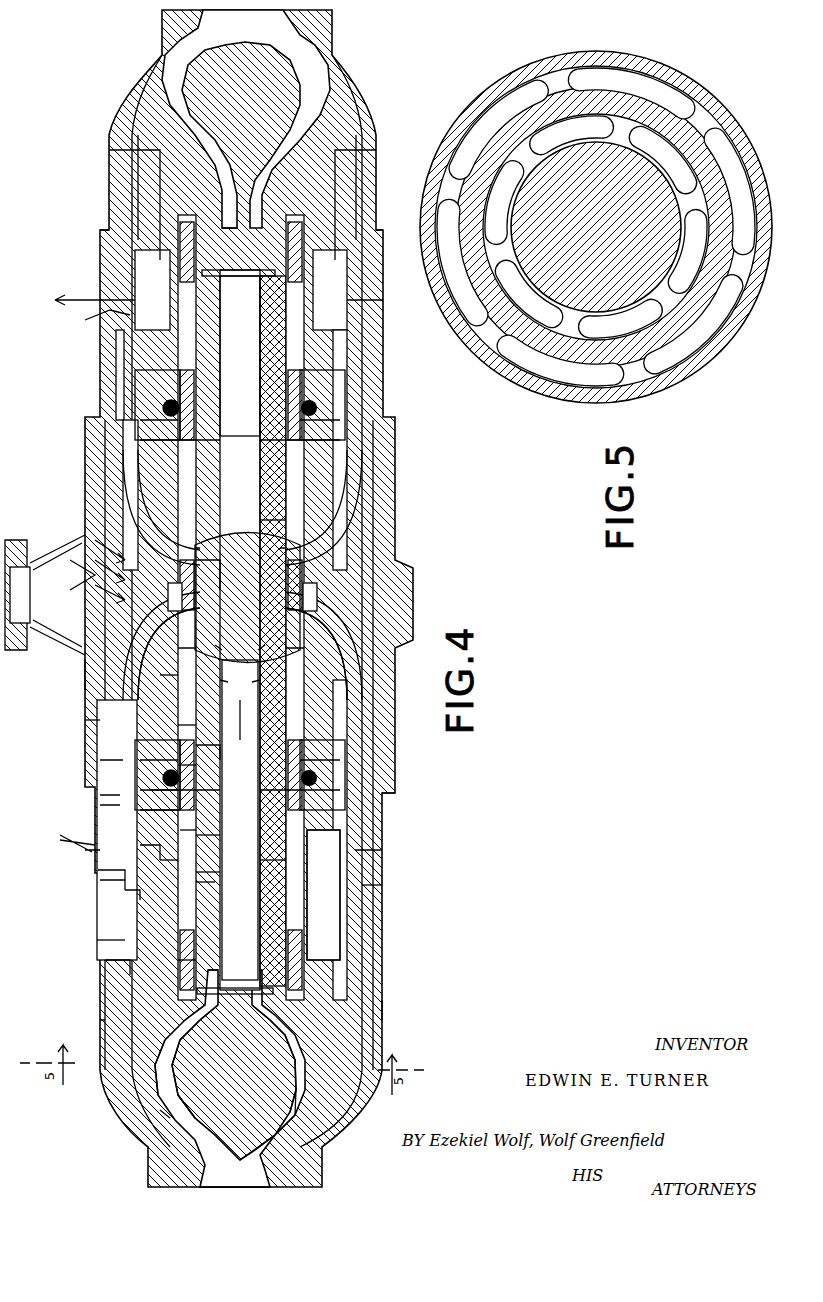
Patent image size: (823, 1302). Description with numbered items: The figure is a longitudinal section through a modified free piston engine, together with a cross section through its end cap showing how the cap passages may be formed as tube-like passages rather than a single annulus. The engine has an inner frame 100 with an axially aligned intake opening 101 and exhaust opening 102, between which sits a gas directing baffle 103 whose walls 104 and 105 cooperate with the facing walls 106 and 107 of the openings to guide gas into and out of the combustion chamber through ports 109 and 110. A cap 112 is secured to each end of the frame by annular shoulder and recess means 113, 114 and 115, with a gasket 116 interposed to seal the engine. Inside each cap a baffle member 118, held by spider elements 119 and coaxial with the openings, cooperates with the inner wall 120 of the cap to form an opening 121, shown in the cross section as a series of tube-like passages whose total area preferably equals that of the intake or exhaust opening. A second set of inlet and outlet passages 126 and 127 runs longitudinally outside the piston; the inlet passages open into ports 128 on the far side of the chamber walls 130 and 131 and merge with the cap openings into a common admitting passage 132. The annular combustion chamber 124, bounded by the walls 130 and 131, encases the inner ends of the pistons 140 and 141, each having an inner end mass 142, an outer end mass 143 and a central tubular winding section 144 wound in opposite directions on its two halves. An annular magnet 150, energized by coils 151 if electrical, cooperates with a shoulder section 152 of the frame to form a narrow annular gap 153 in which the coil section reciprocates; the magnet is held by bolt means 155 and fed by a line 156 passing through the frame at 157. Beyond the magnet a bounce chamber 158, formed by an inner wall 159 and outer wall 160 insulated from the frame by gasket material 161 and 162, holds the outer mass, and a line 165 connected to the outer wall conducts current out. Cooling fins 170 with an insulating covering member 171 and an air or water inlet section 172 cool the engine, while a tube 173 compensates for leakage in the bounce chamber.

In FIG. 4, the inner frame 100 is at (215, 835).
In FIG. 4, the intake opening 101 is at (254, 820).
In FIG. 4, the exhaust opening 102 is at (254, 420).
In FIG. 4, the gas directing baffle 103 is at (228, 682).
In FIG. 4, the baffle wall 104 is at (252, 682).
In FIG. 4, the baffle wall 105 is at (257, 570).
In FIG. 4, the facing wall of intake opening 106 is at (190, 648).
In FIG. 4, the facing wall of exhaust opening 107 is at (268, 540).
In FIG. 4, the port 109 is at (218, 650).
In FIG. 4, the port 110 is at (200, 548).
In FIG. 4, the cap 112 is at (224, 256).
In FIG. 4, the annular shoulder and recess means 113 is at (260, 870).
In FIG. 4, the annular shoulder and recess means 114 is at (388, 840).
In FIG. 4, the annular shoulder and recess means 115 is at (100, 945).
In FIG. 4, the gasket 116 is at (380, 888).
In FIG. 4, the baffle member 118 is at (222, 1065).
In FIG. 5, the baffle member 118 is at (634, 210).
In FIG. 4, the spider elements 119 is at (185, 1112).
In FIG. 4, the inner wall of cap 120 is at (168, 1028).
In FIG. 4, the opening 121 is at (165, 1118).
In FIG. 5, the opening 121 is at (515, 285).
In FIG. 4, the combustion chamber 124 is at (196, 575).
In FIG. 4, the inlet passages 126 is at (105, 1035).
In FIG. 4, the outlet passages 127 is at (102, 297).
In FIG. 4, the ports 128 is at (172, 612).
In FIG. 4, the outer wall of annular chamber 130 is at (140, 690).
In FIG. 4, the inner wall of annular chamber 131 is at (240, 720).
In FIG. 4, the common admitting passage 132 is at (225, 1165).
In FIG. 4, the piston 140 is at (205, 752).
In FIG. 4, the piston 141 is at (187, 411).
In FIG. 4, the inner end mass 142 is at (165, 682).
In FIG. 4, the outer end mass 143 is at (100, 880).
In FIG. 4, the central tubular winding section 144 is at (175, 785).
In FIG. 4, the annular magnet 150 is at (175, 812).
In FIG. 4, the coils 151 is at (162, 790).
In FIG. 4, the shoulder section 152 is at (185, 830).
In FIG. 4, the gap 153 is at (195, 768).
In FIG. 4, the bolt means 155 is at (180, 728).
In FIG. 4, the line 156 is at (100, 800).
In FIG. 4, the frame passage 157 is at (85, 850).
In FIG. 4, the bounce chamber 158 is at (192, 960).
In FIG. 4, the inner wall of bounce chamber 159 is at (212, 882).
In FIG. 4, the outer wall of bounce chamber 160 is at (135, 895).
In FIG. 4, the insulating gasket material 161 is at (215, 872).
In FIG. 4, the insulating gasket material 162 is at (165, 865).
In FIG. 4, the line 165 is at (150, 850).
In FIG. 4, the cooling fins 170 is at (85, 725).
In FIG. 4, the insulating covering member 171 is at (85, 672).
In FIG. 4, the air or water inlet section 172 is at (46, 642).
In FIG. 4, the tube 173 is at (115, 975).